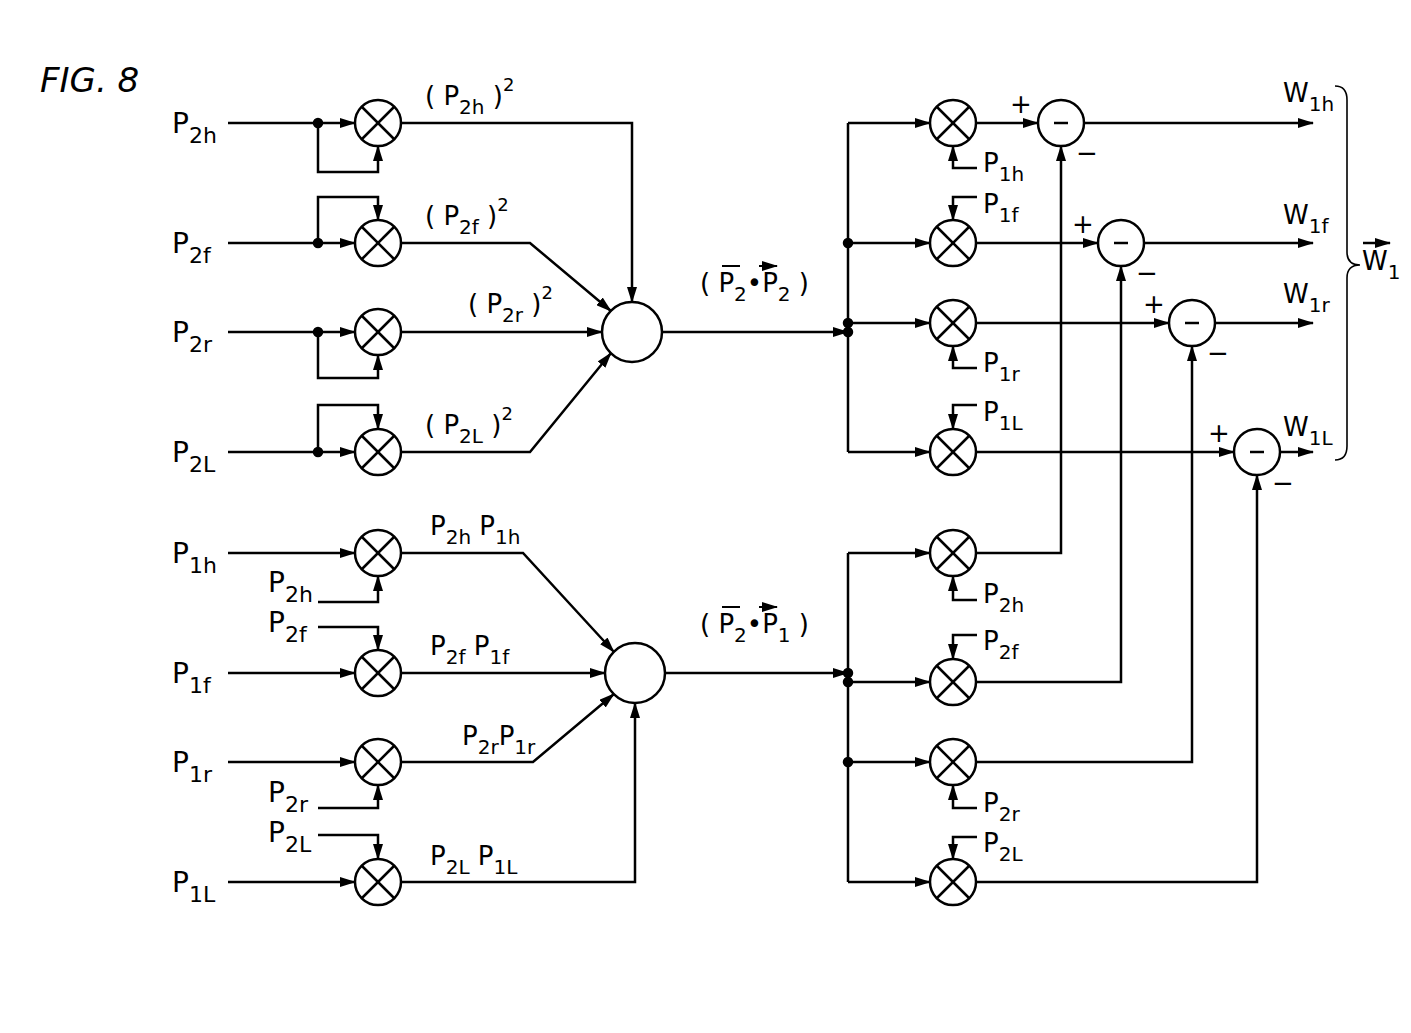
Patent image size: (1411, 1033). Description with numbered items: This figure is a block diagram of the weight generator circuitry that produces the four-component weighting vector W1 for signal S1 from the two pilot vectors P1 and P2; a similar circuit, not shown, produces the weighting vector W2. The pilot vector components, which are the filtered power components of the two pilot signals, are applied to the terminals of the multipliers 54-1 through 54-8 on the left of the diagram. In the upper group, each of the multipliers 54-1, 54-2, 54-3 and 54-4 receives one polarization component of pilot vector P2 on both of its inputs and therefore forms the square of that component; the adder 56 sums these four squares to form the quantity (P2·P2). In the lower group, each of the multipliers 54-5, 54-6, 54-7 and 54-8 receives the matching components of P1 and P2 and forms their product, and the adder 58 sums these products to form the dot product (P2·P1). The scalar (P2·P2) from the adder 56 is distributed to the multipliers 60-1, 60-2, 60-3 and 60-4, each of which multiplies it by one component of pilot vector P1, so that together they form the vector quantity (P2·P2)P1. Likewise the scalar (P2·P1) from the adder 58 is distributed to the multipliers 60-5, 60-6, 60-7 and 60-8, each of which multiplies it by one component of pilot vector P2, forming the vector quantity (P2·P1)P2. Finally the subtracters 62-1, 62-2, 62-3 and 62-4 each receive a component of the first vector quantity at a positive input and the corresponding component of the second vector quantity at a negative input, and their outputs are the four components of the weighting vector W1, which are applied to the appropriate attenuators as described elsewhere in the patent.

The multiplier 54-1 is at (362, 107).
The multiplier 54-2 is at (362, 258).
The multiplier 54-3 is at (372, 309).
The multiplier 54-4 is at (362, 470).
The multiplier 54-5 is at (362, 537).
The multiplier 54-6 is at (362, 688).
The multiplier 54-7 is at (372, 739).
The multiplier 54-8 is at (362, 898).
The adder 56 is at (618, 304).
The adder 58 is at (652, 645).
The multiplier 60-1 is at (937, 107).
The multiplier 60-2 is at (937, 258).
The multiplier 60-3 is at (968, 308).
The multiplier 60-4 is at (937, 470).
The multiplier 60-5 is at (937, 537).
The multiplier 60-6 is at (937, 698).
The multiplier 60-7 is at (968, 746).
The multiplier 60-8 is at (937, 898).
The subtracter 62-1 is at (1077, 108).
The subtracter 62-2 is at (1138, 228).
The subtracter 62-3 is at (1206, 308).
The subtracter 62-4 is at (1255, 429).